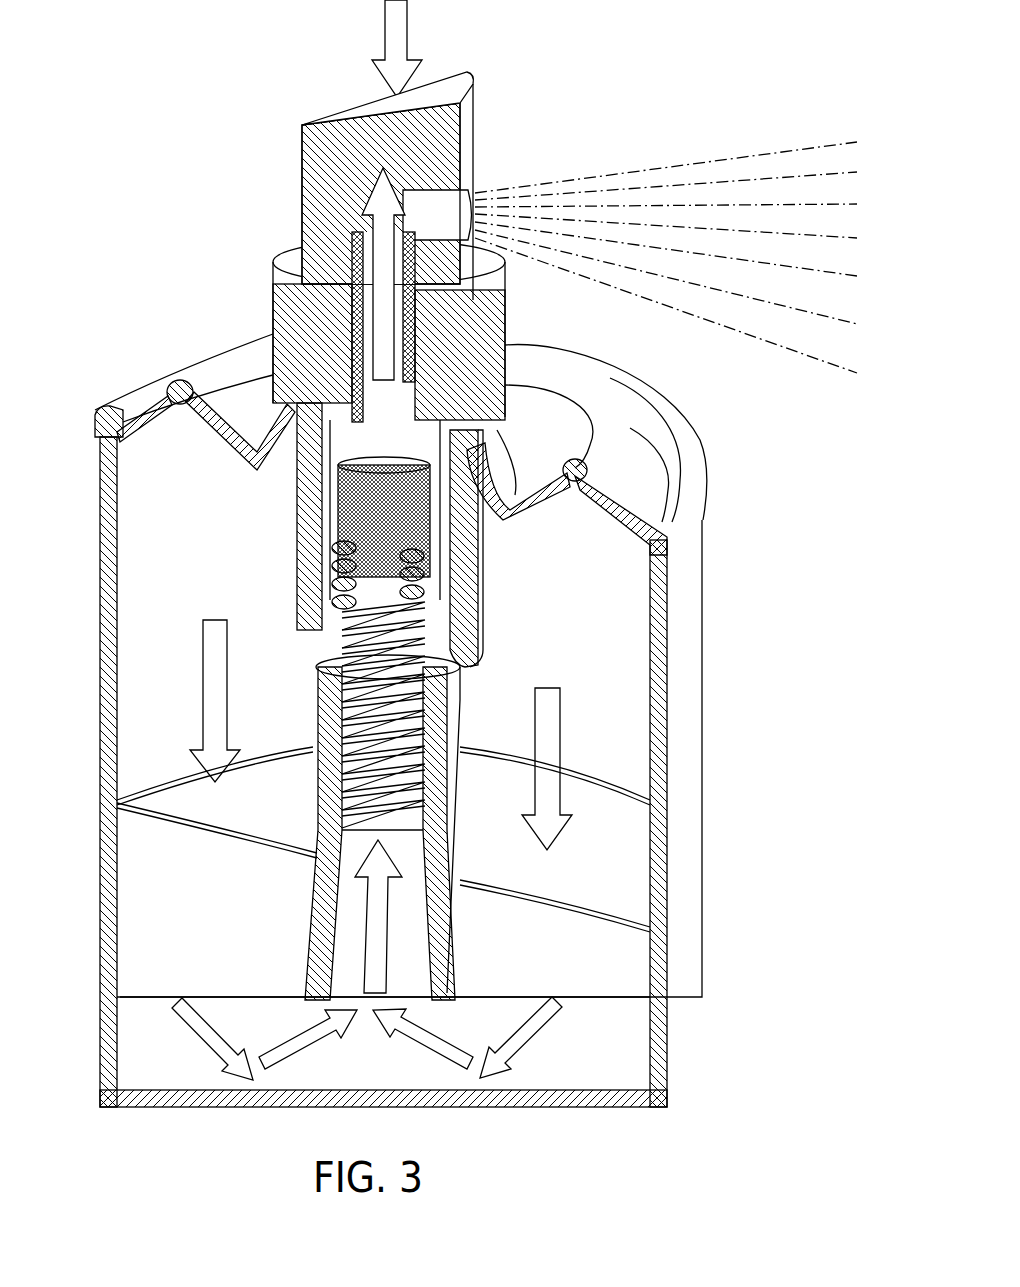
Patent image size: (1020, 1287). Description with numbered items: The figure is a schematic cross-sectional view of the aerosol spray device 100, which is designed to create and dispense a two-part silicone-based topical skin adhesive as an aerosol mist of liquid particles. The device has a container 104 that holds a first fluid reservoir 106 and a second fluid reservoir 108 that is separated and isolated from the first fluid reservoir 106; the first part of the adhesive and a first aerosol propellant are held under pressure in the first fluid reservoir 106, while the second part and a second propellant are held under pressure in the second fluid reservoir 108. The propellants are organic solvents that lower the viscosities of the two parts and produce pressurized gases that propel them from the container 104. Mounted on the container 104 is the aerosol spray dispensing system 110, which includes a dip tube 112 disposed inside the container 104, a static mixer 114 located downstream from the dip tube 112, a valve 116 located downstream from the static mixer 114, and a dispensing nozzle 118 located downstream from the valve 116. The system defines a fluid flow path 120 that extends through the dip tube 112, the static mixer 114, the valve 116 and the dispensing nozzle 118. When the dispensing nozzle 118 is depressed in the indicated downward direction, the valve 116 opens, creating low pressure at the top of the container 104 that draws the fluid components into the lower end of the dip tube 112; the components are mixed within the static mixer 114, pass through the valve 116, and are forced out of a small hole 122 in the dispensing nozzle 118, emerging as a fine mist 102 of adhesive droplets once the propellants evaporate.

The aerosol spray device 100 is at (150, 322).
The fine mist 102 is at (723, 150).
The container 104 is at (690, 572).
The first fluid reservoir 106 is at (205, 585).
The second fluid reservoir 108 is at (595, 607).
The aerosol spray dispensing system 110 is at (450, 636).
The dip tube 112 is at (315, 875).
The static mixer 114 is at (318, 700).
The valve 116 is at (300, 470).
The dispensing nozzle 118 is at (300, 172).
The fluid flow path 120 is at (362, 945).
The small hole 122 is at (407, 180).